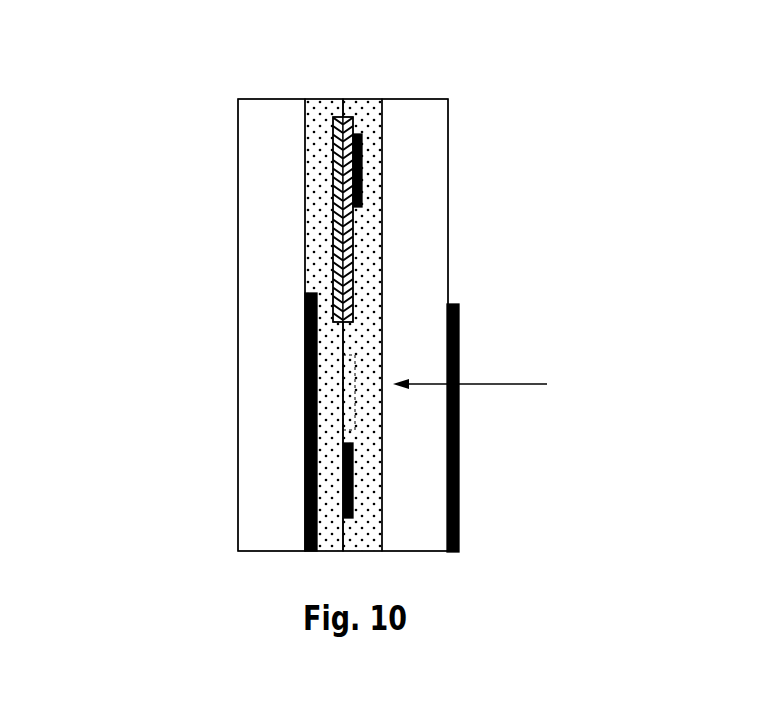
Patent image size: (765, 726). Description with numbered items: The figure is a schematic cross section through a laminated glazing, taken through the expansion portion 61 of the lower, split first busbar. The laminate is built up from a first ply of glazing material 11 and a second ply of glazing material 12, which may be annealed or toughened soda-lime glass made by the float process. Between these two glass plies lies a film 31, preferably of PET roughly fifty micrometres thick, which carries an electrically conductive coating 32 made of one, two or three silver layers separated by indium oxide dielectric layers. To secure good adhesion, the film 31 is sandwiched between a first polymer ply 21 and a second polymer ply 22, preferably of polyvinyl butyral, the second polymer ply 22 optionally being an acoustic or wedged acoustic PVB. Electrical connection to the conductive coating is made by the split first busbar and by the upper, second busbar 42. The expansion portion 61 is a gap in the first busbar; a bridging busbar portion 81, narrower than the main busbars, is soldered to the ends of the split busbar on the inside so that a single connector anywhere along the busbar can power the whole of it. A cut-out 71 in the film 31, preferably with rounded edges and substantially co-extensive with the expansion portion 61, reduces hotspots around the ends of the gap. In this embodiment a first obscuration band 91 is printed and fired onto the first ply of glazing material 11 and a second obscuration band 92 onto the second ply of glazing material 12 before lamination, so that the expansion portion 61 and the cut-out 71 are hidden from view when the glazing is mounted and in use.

The first ply of glazing material 11 is at (272, 99).
The second ply of glazing material 12 is at (415, 99).
The first polymer ply 21 is at (325, 99).
The second polymer ply 22 is at (363, 99).
The film 31 is at (333, 277).
The electrically conductive coating 32 is at (362, 277).
The second busbar 42 is at (362, 172).
The expansion portion 61 is at (493, 386).
The cut-out 71 is at (343, 335).
The bridging busbar portion 81 is at (353, 481).
The first obscuration band 91 is at (305, 492).
The second obscuration band 92 is at (459, 519).